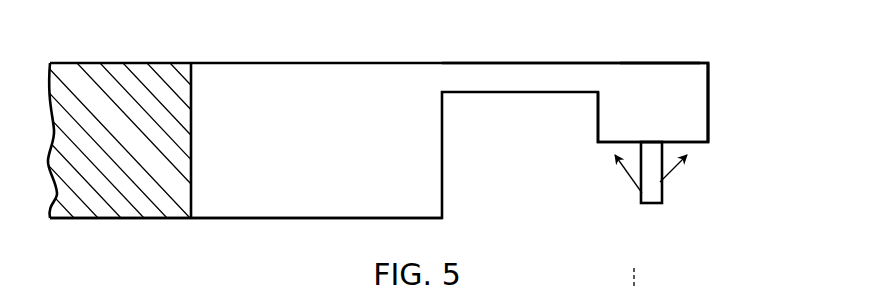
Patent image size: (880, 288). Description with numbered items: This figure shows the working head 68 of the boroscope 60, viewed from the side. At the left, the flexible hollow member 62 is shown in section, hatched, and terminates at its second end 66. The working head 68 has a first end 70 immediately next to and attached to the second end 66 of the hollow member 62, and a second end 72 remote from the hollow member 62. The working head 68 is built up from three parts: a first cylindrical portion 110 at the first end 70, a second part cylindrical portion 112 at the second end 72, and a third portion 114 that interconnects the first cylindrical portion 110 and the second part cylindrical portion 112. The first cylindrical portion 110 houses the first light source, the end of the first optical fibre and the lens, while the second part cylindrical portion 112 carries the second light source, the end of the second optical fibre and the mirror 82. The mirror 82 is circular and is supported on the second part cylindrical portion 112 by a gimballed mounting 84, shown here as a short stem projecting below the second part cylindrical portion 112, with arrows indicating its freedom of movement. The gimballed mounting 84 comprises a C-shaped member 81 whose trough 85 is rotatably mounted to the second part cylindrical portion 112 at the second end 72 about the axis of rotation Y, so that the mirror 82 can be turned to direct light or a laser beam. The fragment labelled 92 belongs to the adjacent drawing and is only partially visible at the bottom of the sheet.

The boroscope 60 is at (550, 50).
The flexible hollow member 62 is at (142, 73).
The second end of the hollow member 66 is at (160, 200).
The working head 68 is at (687, 48).
The first end of the working head 70 is at (267, 200).
The second end of the working head 72 is at (710, 115).
The C-shaped member 81 is at (652, 77).
The mirror 82 is at (652, 187).
The first cylindrical portion 110 is at (310, 180).
The second part cylindrical portion 112 is at (700, 77).
The third portion 114 is at (533, 68).
The axis of rotation Y is at (630, 280).
The element 92 is at (597, 287).
The trough 85 is at (675, 287).
The gimballed mounting 84 is at (707, 287).